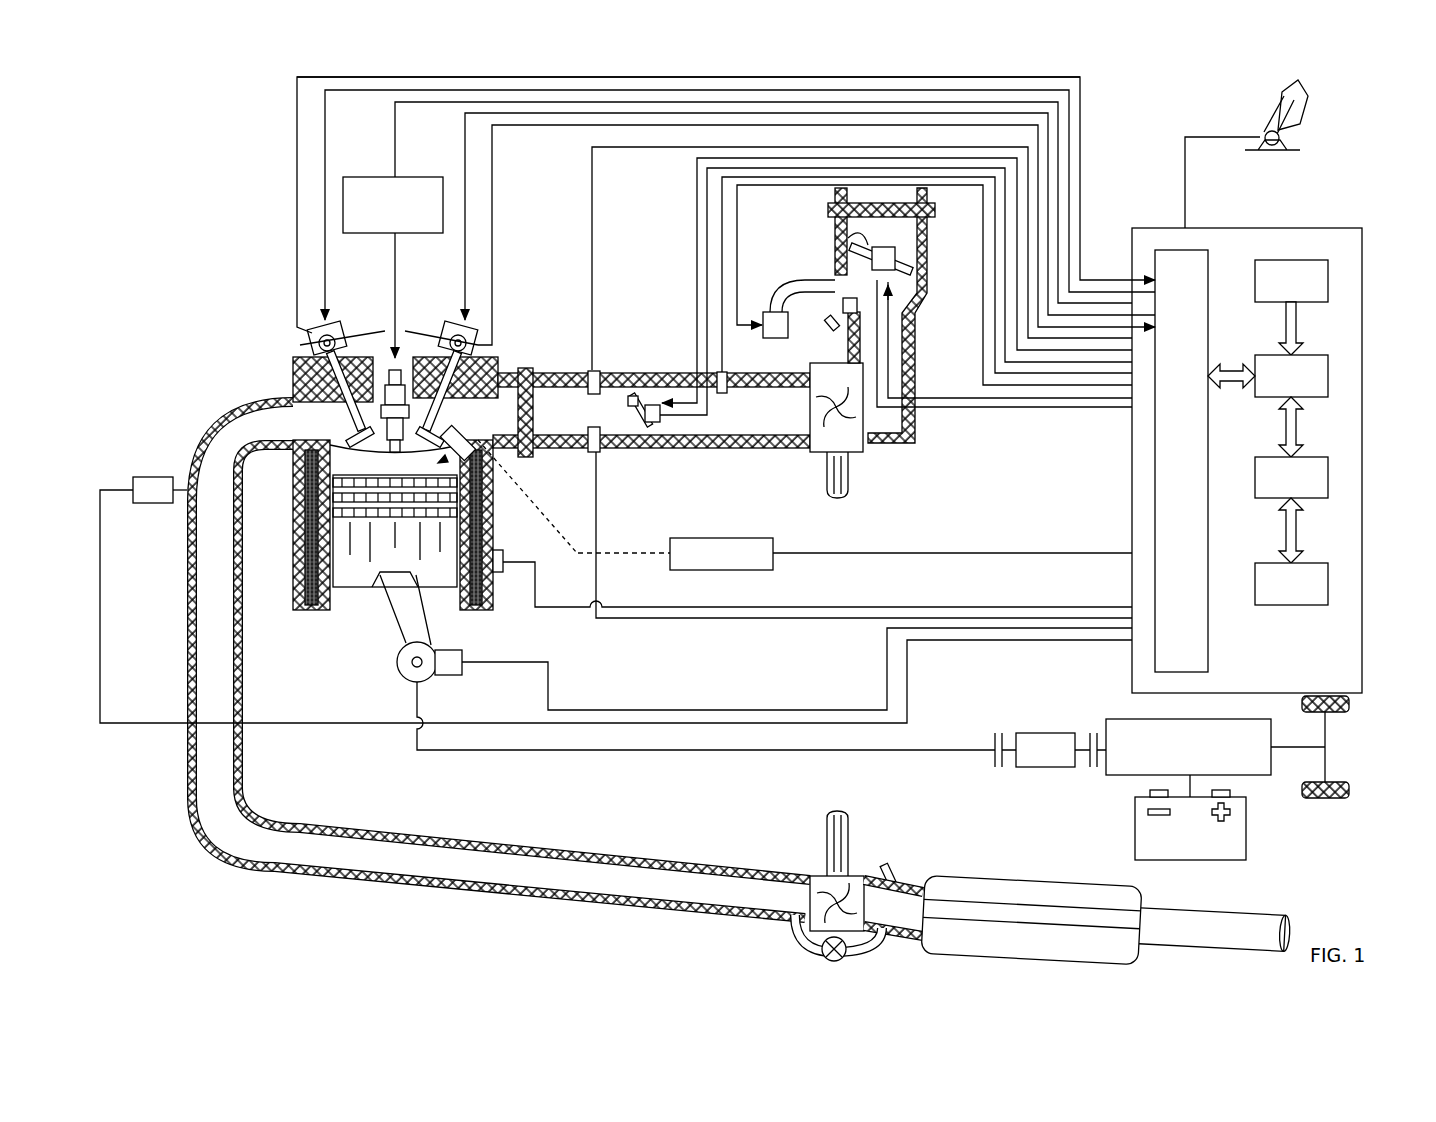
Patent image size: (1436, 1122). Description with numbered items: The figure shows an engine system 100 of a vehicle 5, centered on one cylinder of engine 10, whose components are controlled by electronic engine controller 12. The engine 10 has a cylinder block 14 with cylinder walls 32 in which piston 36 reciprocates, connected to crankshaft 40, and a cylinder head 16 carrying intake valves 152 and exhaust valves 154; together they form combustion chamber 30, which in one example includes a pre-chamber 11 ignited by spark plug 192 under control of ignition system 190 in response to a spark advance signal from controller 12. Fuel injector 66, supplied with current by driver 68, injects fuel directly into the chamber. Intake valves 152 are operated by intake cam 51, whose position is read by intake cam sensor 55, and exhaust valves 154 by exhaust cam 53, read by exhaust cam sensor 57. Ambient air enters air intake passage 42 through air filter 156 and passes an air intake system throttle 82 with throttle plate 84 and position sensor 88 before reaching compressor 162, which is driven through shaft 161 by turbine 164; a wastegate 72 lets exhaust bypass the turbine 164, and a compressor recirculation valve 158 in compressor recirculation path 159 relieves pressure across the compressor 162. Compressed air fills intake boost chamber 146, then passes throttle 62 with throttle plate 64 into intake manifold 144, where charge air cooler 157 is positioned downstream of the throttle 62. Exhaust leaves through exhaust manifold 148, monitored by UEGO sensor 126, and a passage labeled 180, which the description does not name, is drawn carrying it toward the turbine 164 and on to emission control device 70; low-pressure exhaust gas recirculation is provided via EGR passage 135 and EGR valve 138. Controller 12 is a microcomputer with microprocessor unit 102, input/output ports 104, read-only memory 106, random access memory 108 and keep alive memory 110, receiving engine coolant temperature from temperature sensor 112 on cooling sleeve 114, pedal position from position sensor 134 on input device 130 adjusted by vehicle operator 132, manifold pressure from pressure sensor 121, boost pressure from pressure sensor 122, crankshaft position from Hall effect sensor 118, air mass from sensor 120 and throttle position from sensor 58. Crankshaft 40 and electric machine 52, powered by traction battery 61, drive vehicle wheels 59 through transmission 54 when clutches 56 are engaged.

The engine system 100 is at (140, 133).
The engine 10 is at (224, 292).
The vehicle 5 is at (1372, 737).
The electronic engine controller 12 is at (1362, 228).
The cylinder block 14 is at (290, 508).
The cylinder head 16 is at (505, 358).
The pre-chamber 11 is at (386, 450).
The combustion chamber 30 is at (303, 560).
The cylinder walls 32 is at (332, 612).
The piston 36 is at (378, 576).
The crankshaft 40 is at (405, 680).
The air intake passage 42 is at (895, 246).
The intake cam 51 is at (452, 322).
The electric machine 52 is at (1045, 768).
The exhaust cam 53 is at (333, 322).
The transmission 54 is at (1250, 776).
The intake cam sensor 55 is at (472, 345).
The clutch 56 is at (995, 740).
The exhaust cam sensor 57 is at (312, 338).
The throttle position sensor 58 is at (649, 432).
The vehicle wheels 59 is at (1330, 800).
The traction battery 61 is at (1187, 860).
The throttle 62 is at (640, 394).
The throttle plate 64 is at (655, 395).
The fuel injector 66 is at (507, 489).
The driver 68 is at (755, 538).
The emission control device 70 is at (925, 946).
The wastegate 72 is at (818, 952).
The air intake system throttle 82 is at (850, 262).
The throttle plate 84 is at (848, 241).
The position sensor 88 is at (850, 266).
The microprocessor unit 102 is at (1330, 376).
The input/output ports 104 is at (1210, 262).
The read-only memory 106 is at (1330, 280).
The random access memory 108 is at (1330, 480).
The keep alive memory 110 is at (1330, 586).
The temperature sensor 112 is at (500, 552).
The cooling sleeve 114 is at (486, 598).
The Hall effect sensor 118 is at (455, 678).
The air mass sensor 120 is at (595, 452).
The pressure sensor 121 is at (594, 370).
The pressure sensor 122 is at (724, 374).
The UEGO sensor 126 is at (135, 478).
The input device 130 is at (1262, 124).
The vehicle operator 132 is at (1304, 103).
The position sensor 134 is at (1292, 144).
The EGR passage 135 is at (852, 340).
The EGR valve 138 is at (843, 306).
The intake manifold 144 is at (588, 424).
The intake boost chamber 146 is at (751, 424).
The exhaust manifold 148 is at (283, 432).
The intake valves 152 is at (448, 432).
The exhaust valves 154 is at (305, 400).
The air filter 156 is at (935, 210).
The charge air cooler 157 is at (535, 455).
The compressor recirculation valve 158 is at (772, 312).
The compressor recirculation path 159 is at (832, 322).
The shaft 161 is at (850, 492).
The compressor 162 is at (850, 455).
The turbine 164 is at (812, 876).
The exhaust passage to turbine 180 is at (446, 902).
The ignition system 190 is at (386, 178).
The spark plug 192 is at (410, 345).